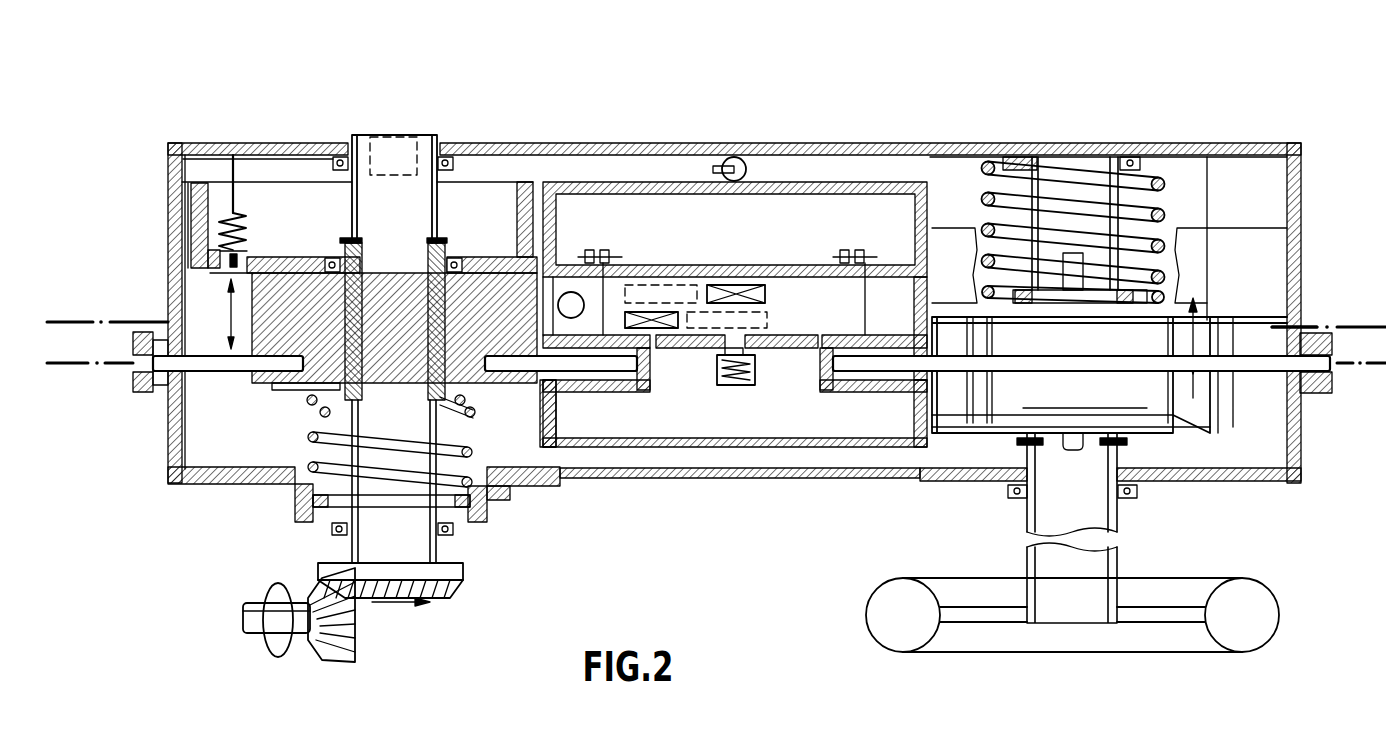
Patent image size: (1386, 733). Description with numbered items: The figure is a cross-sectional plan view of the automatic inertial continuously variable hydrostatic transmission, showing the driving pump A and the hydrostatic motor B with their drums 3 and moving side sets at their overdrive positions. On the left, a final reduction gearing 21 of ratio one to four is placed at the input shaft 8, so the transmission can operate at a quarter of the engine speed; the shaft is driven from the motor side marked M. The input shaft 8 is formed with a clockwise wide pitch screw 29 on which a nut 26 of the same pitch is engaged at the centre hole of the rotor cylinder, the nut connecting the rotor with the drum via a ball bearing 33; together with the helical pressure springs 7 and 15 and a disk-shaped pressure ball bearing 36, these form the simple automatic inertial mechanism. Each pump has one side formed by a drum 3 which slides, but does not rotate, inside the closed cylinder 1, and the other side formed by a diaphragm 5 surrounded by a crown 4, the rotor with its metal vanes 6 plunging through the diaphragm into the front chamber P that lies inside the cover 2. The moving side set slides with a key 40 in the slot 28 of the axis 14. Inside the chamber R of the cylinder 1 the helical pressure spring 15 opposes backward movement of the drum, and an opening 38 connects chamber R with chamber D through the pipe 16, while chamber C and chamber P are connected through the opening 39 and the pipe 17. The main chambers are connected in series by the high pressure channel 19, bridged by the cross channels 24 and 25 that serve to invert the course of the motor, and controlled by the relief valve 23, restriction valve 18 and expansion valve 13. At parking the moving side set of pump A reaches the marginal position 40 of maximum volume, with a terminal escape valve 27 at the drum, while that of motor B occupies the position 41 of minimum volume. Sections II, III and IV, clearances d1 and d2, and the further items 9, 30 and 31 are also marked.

The closed cylinder 1 is at (172, 190).
The cover 2 is at (172, 482).
The drum 3 is at (178, 148).
The crown 4 is at (145, 392).
The diaphragm 5 is at (210, 360).
The metal vanes 6 is at (170, 235).
The helical pressure spring 7 is at (432, 553).
The input shaft 8 is at (358, 135).
The sleeve 9 is at (285, 235).
The expansion valve 13 is at (740, 388).
The axis 14 is at (1092, 160).
The helical pressure spring 15 is at (1052, 160).
The pipe 16 is at (650, 182).
The pipe 17 is at (647, 478).
The restriction valve 18 is at (735, 157).
The high pressure channel 19 is at (826, 285).
The final reduction gearing 21 is at (360, 603).
The relief valve 23 is at (578, 292).
The cross channel 24 is at (653, 310).
The cross channel 25 is at (750, 283).
The wide pitch nut 26 is at (302, 255).
The terminal escape valve 27 is at (233, 210).
The slot 28 is at (1063, 447).
The clockwise wide pitch screw 29 is at (392, 160).
The bottom wall 30 is at (603, 470).
The top wall 31 is at (500, 152).
The ball bearing 33 is at (447, 162).
The disk-shaped pressure ball bearing 36 is at (308, 402).
The opening 38 is at (930, 150).
The opening 39 is at (885, 478).
The marginal position 40 is at (332, 258).
The predetermined position 41 is at (1112, 160).
The clearance d1 is at (229, 301).
The clearance d2 is at (1207, 160).
The motor M is at (240, 624).
The driving pump A is at (505, 492).
The hydrostatic motor B is at (1223, 487).
The chamber C is at (523, 415).
The chamber D is at (481, 216).
The front chamber P is at (1109, 344).
The chamber of the cylinder R is at (1250, 191).
The section line II is at (1375, 312).
The section line III is at (65, 308).
The section line IV is at (65, 380).